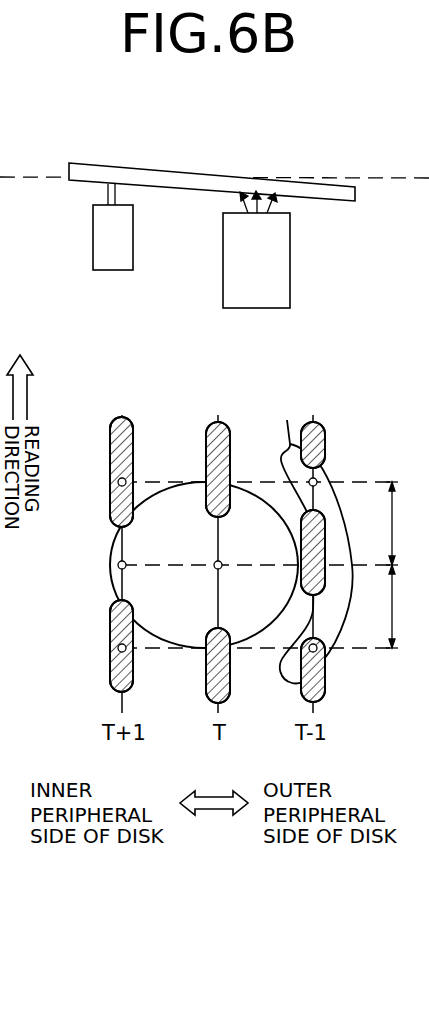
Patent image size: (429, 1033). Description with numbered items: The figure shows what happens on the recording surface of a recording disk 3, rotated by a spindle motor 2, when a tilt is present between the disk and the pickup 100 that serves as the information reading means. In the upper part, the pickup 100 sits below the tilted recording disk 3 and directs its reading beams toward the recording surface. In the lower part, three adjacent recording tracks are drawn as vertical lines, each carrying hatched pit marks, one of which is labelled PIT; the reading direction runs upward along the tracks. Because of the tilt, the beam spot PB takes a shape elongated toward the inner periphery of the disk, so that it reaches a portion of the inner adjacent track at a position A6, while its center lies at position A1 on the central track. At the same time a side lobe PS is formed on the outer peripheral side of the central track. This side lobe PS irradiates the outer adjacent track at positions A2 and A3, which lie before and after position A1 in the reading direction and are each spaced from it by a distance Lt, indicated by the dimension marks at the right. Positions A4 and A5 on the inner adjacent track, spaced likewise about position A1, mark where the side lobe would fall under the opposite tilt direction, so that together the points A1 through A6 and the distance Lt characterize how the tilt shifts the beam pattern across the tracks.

The spindle motor 2 is at (92, 233).
The recording disk 3 is at (230, 173).
The pickup 100 is at (222, 292).
The beam spot PB is at (163, 495).
The side lobe PS is at (309, 537).
The pit PIT is at (110, 648).
The position A1 is at (221, 562).
The position A2 is at (317, 478).
The position A3 is at (317, 653).
The position A4 is at (110, 471).
The position A5 is at (127, 653).
The position A6 is at (127, 562).
The distance Lt is at (400, 565).